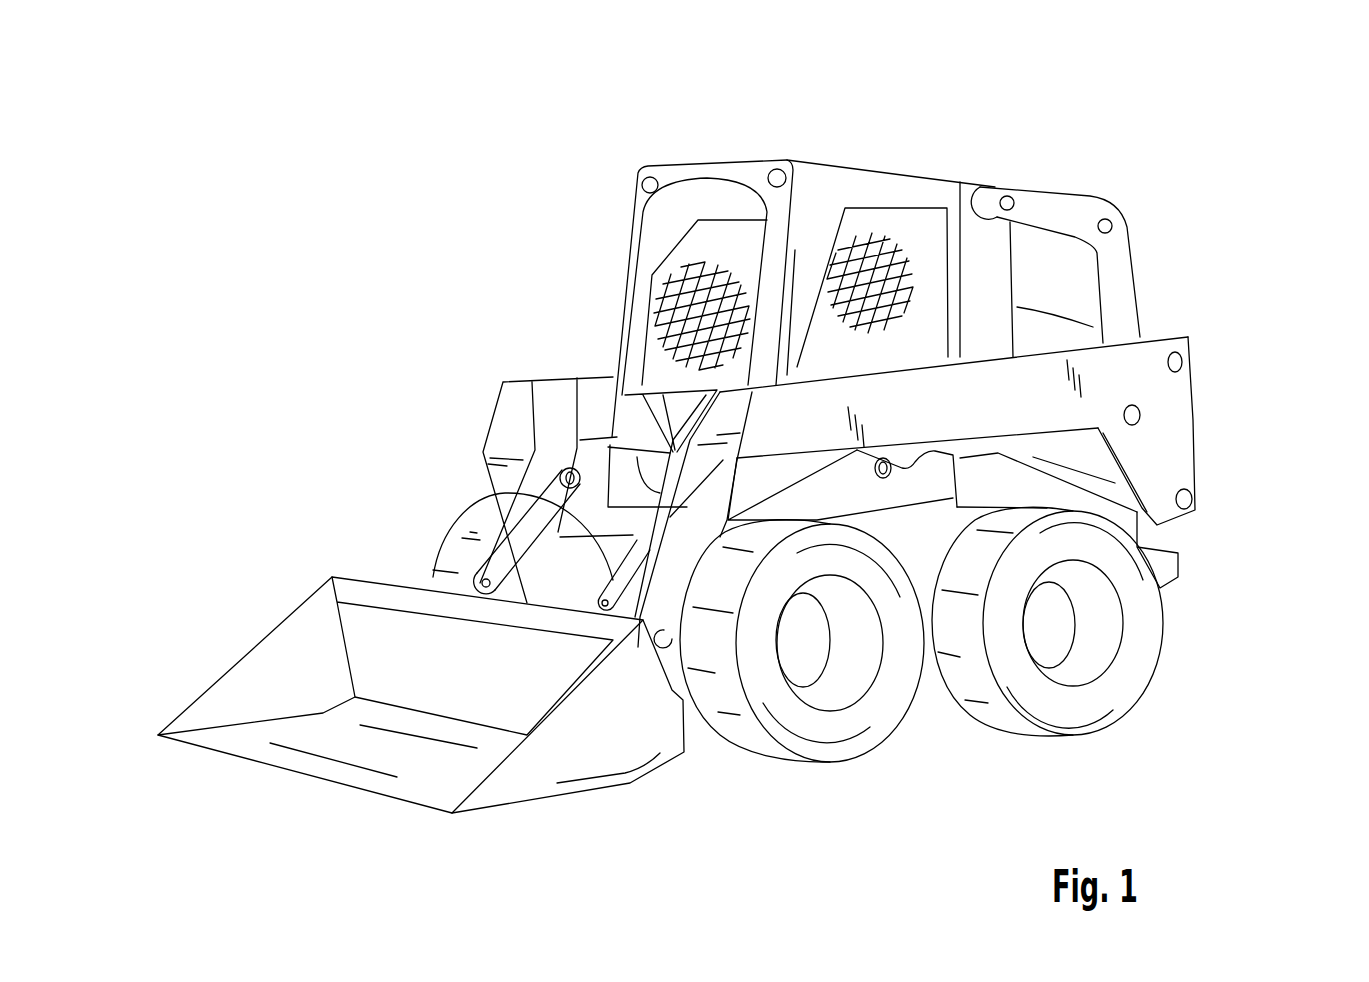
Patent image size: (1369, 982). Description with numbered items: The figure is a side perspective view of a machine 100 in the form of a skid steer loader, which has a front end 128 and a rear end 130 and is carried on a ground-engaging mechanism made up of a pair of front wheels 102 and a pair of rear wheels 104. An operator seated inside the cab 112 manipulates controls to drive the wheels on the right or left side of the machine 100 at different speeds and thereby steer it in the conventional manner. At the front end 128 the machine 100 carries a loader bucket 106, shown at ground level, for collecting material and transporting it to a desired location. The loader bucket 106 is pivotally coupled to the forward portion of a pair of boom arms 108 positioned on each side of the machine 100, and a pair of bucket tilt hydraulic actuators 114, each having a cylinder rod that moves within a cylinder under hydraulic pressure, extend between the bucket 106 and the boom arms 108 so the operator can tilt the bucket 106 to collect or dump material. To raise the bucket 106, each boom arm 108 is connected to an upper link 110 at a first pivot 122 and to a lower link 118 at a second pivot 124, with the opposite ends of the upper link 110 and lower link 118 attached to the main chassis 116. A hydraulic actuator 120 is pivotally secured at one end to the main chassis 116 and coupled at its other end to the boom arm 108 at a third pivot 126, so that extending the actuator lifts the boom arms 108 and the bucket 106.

The machine 100 is at (372, 173).
The front wheels 102 is at (855, 748).
The rear wheels 104 is at (1150, 627).
The loader bucket 106 is at (537, 785).
The boom arms 108 is at (1173, 393).
The upper link 110 is at (1122, 278).
The cab 112 is at (608, 221).
The bucket tilt hydraulic actuators 114 is at (550, 493).
The main chassis 116 is at (980, 237).
The lower link 118 is at (1160, 588).
The hydraulic actuator 120 is at (980, 448).
The first pivot 122 is at (1182, 352).
The second pivot 124 is at (1193, 498).
The third pivot 126 is at (1143, 415).
The front end 128 is at (562, 347).
The rear end 130 is at (1160, 218).